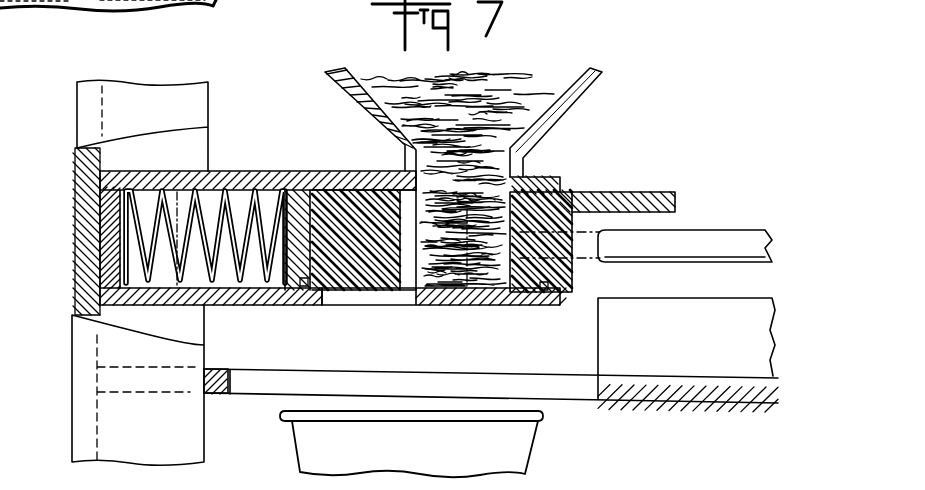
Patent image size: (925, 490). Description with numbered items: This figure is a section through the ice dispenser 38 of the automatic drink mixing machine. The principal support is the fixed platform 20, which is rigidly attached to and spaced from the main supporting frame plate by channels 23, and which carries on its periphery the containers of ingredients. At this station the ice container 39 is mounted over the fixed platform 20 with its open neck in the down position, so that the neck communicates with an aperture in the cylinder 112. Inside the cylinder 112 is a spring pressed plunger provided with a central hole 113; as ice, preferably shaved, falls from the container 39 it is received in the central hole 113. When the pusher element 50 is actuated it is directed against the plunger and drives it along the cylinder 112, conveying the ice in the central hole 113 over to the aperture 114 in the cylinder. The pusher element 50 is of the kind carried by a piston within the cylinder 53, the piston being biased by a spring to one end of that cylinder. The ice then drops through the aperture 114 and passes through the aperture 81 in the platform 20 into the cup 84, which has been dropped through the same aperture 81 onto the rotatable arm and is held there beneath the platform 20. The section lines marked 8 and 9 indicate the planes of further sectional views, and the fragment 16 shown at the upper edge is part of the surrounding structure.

The frame portion 16 is at (32, 18).
The channel 23 is at (139, 97).
The cylinder 112 is at (251, 172).
The section line 8- 8 is at (213, 187).
The section line 9- 9 is at (577, 121).
The ice container 39 is at (352, 98).
The central hole 113 is at (507, 260).
The ice dispenser 38 is at (652, 150).
The aperture 114 is at (398, 305).
The pusher element 50 is at (748, 243).
The cylinder 53 is at (740, 312).
The fixed platform 20 is at (723, 399).
The aperture 81 is at (231, 372).
The cup 84 is at (520, 448).